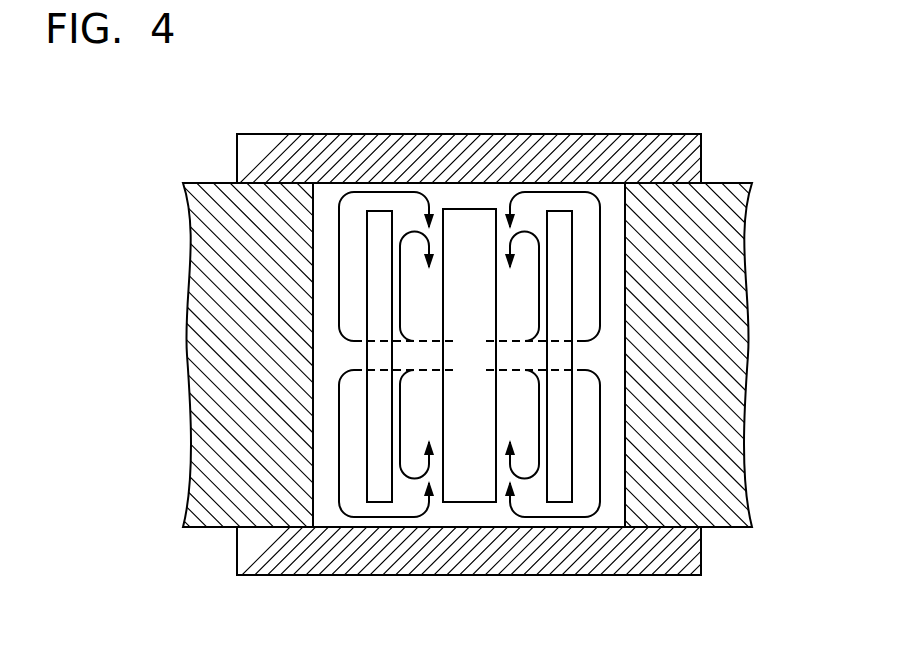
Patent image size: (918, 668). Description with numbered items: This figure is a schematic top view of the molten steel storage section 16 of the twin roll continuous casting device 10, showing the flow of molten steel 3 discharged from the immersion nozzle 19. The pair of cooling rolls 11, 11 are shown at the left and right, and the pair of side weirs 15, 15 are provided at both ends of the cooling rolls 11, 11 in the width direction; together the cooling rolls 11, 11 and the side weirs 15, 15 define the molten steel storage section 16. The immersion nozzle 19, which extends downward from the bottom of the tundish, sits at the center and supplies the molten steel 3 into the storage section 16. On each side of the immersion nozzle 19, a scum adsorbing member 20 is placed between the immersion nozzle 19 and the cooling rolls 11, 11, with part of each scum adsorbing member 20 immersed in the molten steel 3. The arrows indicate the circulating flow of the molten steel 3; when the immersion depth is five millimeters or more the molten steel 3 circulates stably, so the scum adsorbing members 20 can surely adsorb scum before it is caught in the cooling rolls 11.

The twin roll continuous casting device 10 is at (97, 573).
The cooling roll 11 is at (213, 348).
The side weir 15 is at (465, 147).
The molten steel storage section 16 is at (613, 195).
The molten steel 3 is at (614, 508).
The immersion nozzle 19 is at (469, 404).
The scum adsorbing member 20 is at (379, 491).